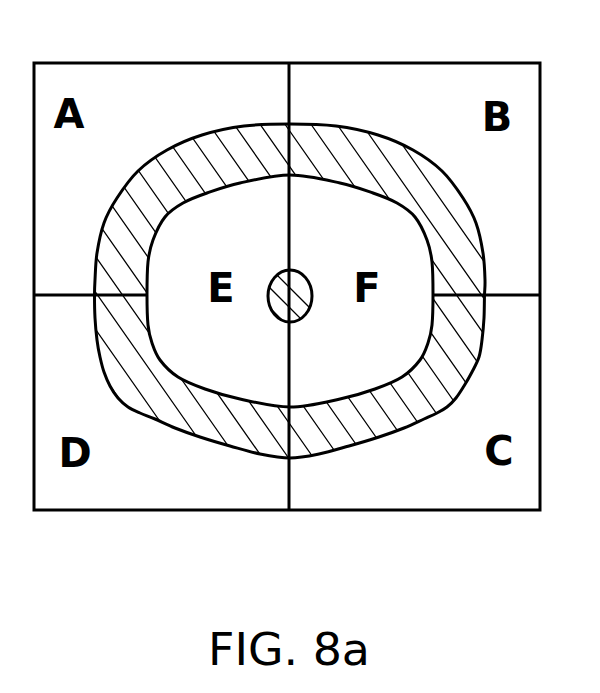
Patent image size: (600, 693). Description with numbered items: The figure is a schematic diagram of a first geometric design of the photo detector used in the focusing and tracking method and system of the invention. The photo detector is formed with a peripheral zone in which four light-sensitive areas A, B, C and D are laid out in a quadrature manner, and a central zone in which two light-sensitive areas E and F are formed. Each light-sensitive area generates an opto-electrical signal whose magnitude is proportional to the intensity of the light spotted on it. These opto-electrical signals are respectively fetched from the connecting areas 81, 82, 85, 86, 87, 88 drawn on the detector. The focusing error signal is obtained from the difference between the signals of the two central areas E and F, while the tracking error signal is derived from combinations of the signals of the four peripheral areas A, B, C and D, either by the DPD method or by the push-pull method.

The connecting area 81 is at (300, 278).
The connecting area 82 is at (280, 310).
The connecting area 85 is at (215, 162).
The connecting area 86 is at (408, 192).
The connecting area 87 is at (408, 400).
The connecting area 88 is at (160, 412).